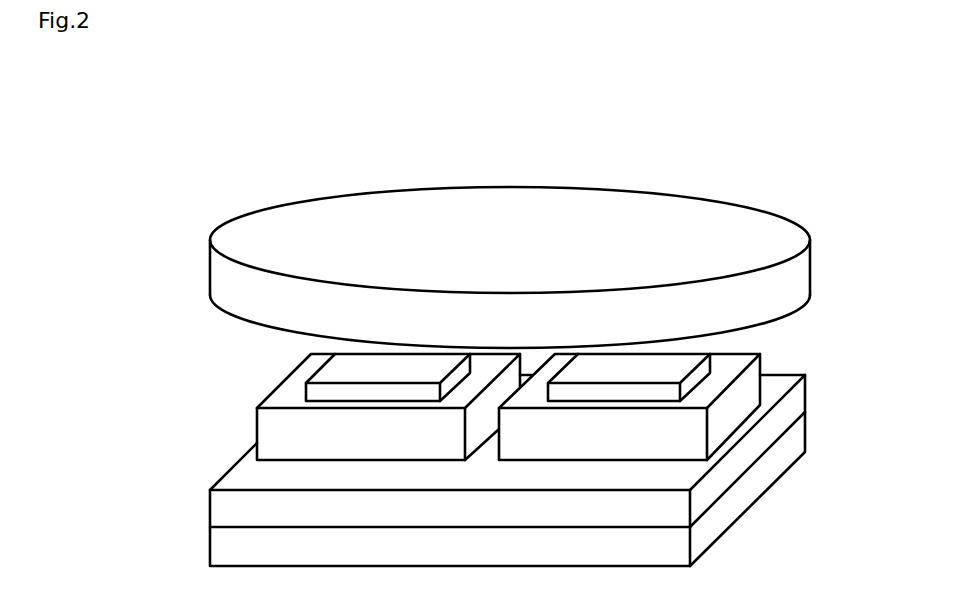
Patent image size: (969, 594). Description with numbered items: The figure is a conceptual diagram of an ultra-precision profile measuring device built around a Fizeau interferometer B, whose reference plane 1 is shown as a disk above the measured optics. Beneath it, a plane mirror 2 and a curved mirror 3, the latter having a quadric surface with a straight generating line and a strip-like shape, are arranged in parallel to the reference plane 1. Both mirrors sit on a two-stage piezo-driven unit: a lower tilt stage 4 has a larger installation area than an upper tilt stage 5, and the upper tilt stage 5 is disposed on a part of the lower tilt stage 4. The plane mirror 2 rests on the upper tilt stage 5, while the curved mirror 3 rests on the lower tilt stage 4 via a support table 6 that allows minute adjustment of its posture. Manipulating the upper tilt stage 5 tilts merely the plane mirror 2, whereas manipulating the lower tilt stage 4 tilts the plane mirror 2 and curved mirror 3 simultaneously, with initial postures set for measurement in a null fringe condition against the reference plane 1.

The Fizeau interferometer B is at (232, 223).
The reference plane 1 is at (240, 318).
The plane mirror 2 is at (321, 371).
The curved mirror 3 is at (702, 352).
The lower tilt stage 4 is at (758, 497).
The upper tilt stage 5 is at (257, 430).
The support table 6 is at (763, 362).